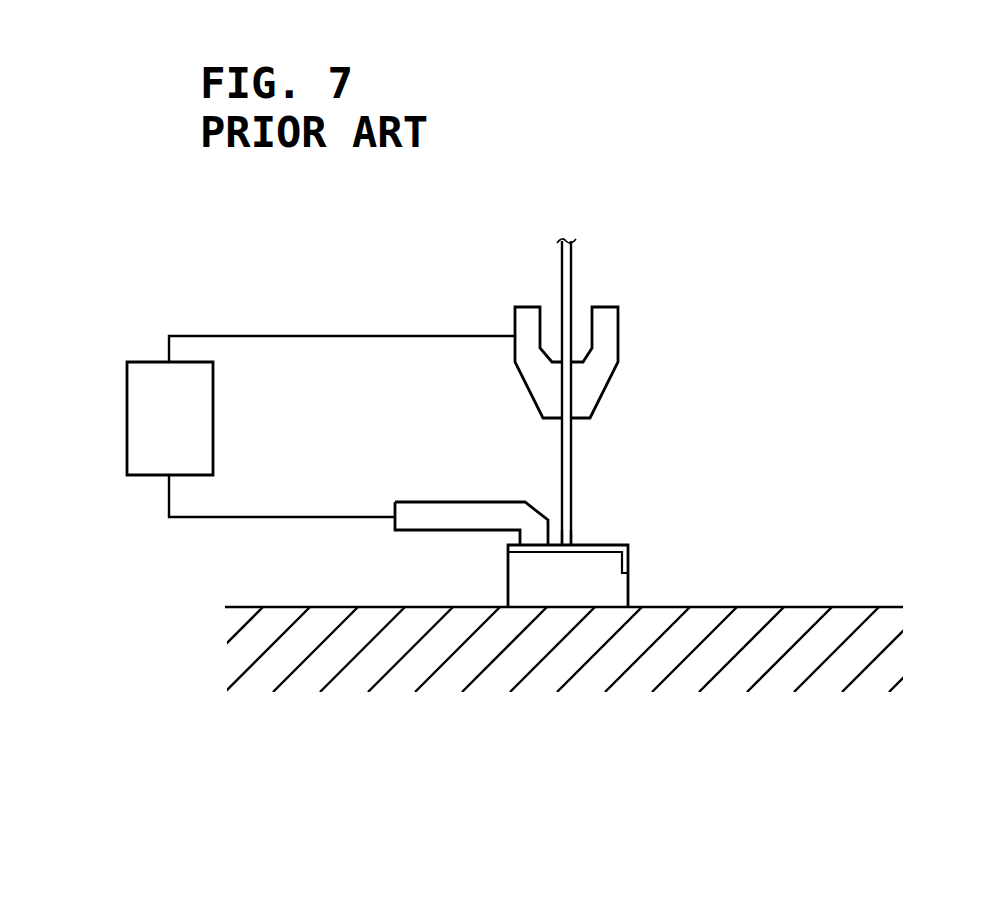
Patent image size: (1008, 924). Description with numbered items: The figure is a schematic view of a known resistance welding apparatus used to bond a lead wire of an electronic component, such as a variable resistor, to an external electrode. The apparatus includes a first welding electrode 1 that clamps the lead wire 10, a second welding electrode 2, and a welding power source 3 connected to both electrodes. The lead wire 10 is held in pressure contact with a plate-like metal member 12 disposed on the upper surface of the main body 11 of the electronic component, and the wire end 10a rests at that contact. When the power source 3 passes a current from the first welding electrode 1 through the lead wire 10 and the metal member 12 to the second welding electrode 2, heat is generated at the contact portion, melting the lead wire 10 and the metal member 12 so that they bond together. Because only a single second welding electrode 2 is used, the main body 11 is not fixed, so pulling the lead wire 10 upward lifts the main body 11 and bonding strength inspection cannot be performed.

The first welding electrode 1 is at (607, 342).
The second welding electrode 2 is at (537, 523).
The welding power source 3 is at (153, 420).
The lead wire 10 is at (572, 463).
The wire end 10a is at (572, 545).
The main body 11 is at (533, 585).
The plate-like metal member 12 is at (625, 560).